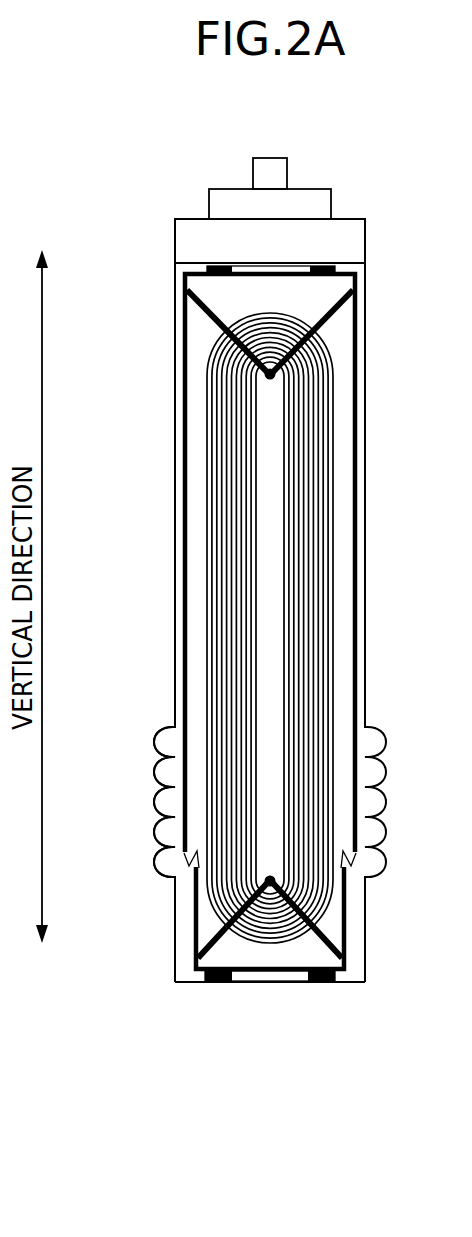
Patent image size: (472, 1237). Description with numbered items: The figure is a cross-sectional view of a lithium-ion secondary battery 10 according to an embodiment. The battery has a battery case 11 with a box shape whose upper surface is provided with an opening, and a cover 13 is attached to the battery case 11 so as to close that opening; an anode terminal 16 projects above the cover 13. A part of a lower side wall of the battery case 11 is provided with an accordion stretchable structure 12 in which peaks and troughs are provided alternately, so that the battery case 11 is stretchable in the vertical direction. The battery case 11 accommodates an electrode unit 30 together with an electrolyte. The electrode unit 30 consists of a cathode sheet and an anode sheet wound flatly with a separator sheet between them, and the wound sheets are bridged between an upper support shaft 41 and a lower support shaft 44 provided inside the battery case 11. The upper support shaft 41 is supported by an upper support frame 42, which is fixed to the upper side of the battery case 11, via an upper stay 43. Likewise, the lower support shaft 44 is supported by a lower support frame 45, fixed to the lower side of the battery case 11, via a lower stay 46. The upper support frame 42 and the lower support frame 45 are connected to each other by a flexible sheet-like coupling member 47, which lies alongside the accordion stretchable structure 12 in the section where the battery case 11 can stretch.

The lithium-ion secondary battery 10 is at (164, 168).
The battery case 11 is at (366, 508).
The accordion stretchable structure 12 is at (159, 765).
The cover 13 is at (345, 219).
The anode terminal 16 is at (275, 158).
The electrode unit 30 is at (335, 583).
The upper support shaft 41 is at (268, 380).
The upper support frame 42 is at (182, 388).
The upper stay 43 is at (203, 323).
The lower support shaft 44 is at (271, 886).
The lower support frame 45 is at (194, 916).
The lower stay 46 is at (199, 962).
The flexible sheet-like coupling member 47 is at (187, 863).